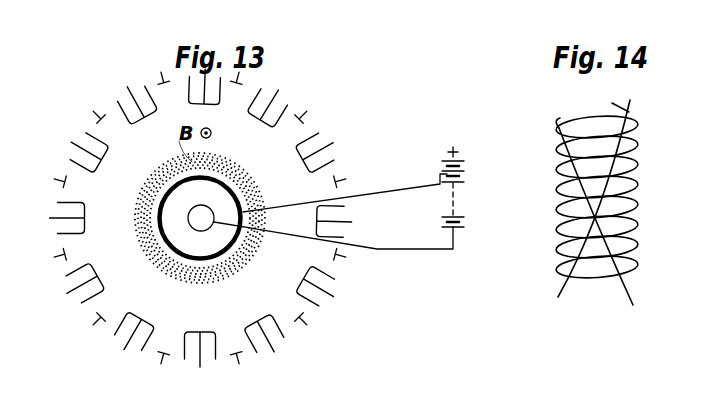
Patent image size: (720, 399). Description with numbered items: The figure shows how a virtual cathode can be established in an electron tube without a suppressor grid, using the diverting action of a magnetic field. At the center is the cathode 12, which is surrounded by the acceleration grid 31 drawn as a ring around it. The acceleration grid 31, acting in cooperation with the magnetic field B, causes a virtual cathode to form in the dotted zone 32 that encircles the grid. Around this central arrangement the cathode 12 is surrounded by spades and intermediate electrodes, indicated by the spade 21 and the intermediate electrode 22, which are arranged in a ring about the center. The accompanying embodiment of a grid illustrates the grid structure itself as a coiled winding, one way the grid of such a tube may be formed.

The cathode 12 is at (192, 210).
The spade 21 is at (81, 153).
The intermediate electrode 22 is at (63, 182).
The acceleration grid 31 is at (244, 200).
The dotted zone 32 is at (229, 163).